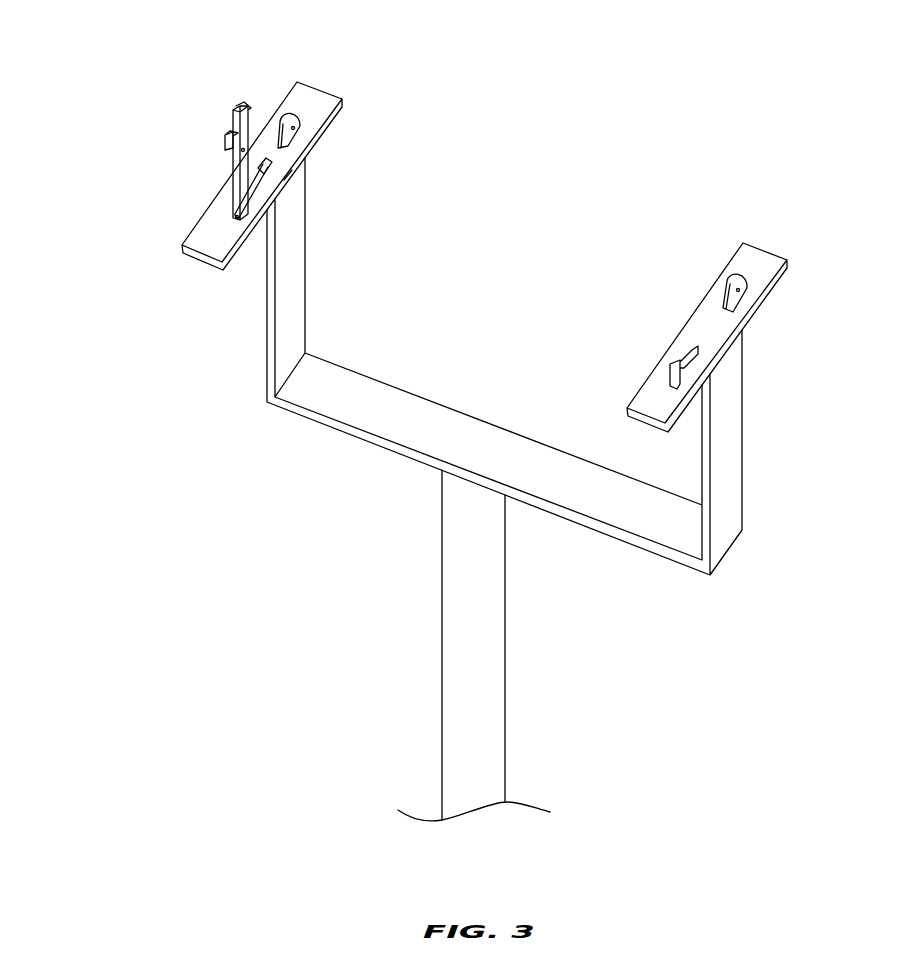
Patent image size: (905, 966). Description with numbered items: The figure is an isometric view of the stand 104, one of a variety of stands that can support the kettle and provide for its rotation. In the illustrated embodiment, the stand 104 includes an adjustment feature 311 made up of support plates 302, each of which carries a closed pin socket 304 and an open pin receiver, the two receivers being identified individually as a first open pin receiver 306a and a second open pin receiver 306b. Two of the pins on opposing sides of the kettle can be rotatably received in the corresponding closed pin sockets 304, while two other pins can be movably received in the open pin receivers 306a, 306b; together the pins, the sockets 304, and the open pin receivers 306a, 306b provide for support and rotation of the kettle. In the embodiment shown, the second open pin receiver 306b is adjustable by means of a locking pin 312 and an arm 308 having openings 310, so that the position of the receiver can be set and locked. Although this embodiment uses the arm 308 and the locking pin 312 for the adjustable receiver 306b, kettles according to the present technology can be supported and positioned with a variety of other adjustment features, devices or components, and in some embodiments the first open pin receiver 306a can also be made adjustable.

The stand 104 is at (707, 69).
The support plates 302 is at (327, 98).
The closed pin sockets 304 is at (290, 117).
The first open pin receiver 306a is at (682, 343).
The second open pin receiver 306b is at (245, 108).
The arm 308 is at (232, 177).
The openings 310 is at (240, 152).
The adjustment feature 311 is at (85, 206).
The locking pin 312 is at (285, 184).